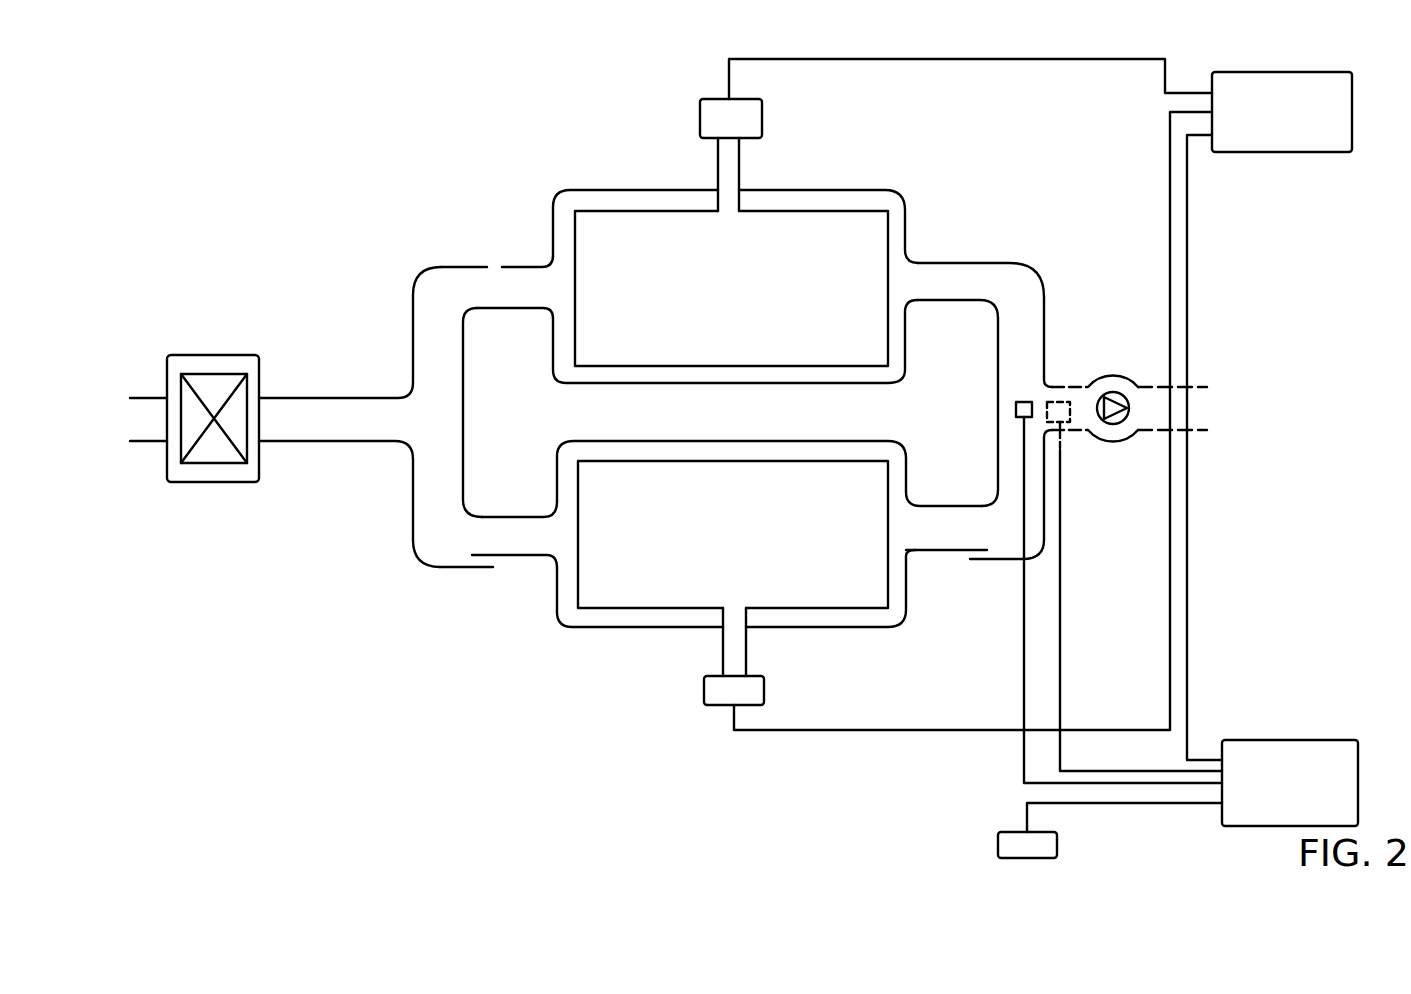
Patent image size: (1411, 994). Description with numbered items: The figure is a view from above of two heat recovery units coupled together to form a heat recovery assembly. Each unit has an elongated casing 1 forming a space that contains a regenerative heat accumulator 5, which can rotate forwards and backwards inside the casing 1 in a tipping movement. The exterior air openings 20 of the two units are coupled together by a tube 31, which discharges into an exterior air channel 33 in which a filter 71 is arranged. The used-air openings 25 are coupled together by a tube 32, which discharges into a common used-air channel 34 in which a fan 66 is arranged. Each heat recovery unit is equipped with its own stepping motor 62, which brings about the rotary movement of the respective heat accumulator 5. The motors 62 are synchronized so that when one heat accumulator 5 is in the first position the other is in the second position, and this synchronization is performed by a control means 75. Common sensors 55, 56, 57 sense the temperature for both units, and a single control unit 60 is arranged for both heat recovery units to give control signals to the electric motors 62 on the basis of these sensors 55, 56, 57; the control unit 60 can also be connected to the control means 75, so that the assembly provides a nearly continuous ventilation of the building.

The casing 1 is at (822, 190).
The regenerative heat accumulator 5 is at (745, 280).
The exterior air opening 20 is at (490, 284).
The used-air opening 25 is at (928, 281).
The tube 31 is at (433, 325).
The tube 32 is at (1030, 338).
The exterior air channel 33 is at (292, 381).
The common used-air channel 34 is at (1080, 396).
The sensor 55 is at (1016, 402).
The sensor 56 is at (1000, 838).
The sensor 57 is at (1065, 446).
The control unit 60 is at (1243, 752).
The stepping motor 62 is at (700, 108).
The fan 66 is at (1128, 421).
The filter 71 is at (214, 386).
The control means 75 is at (1358, 108).